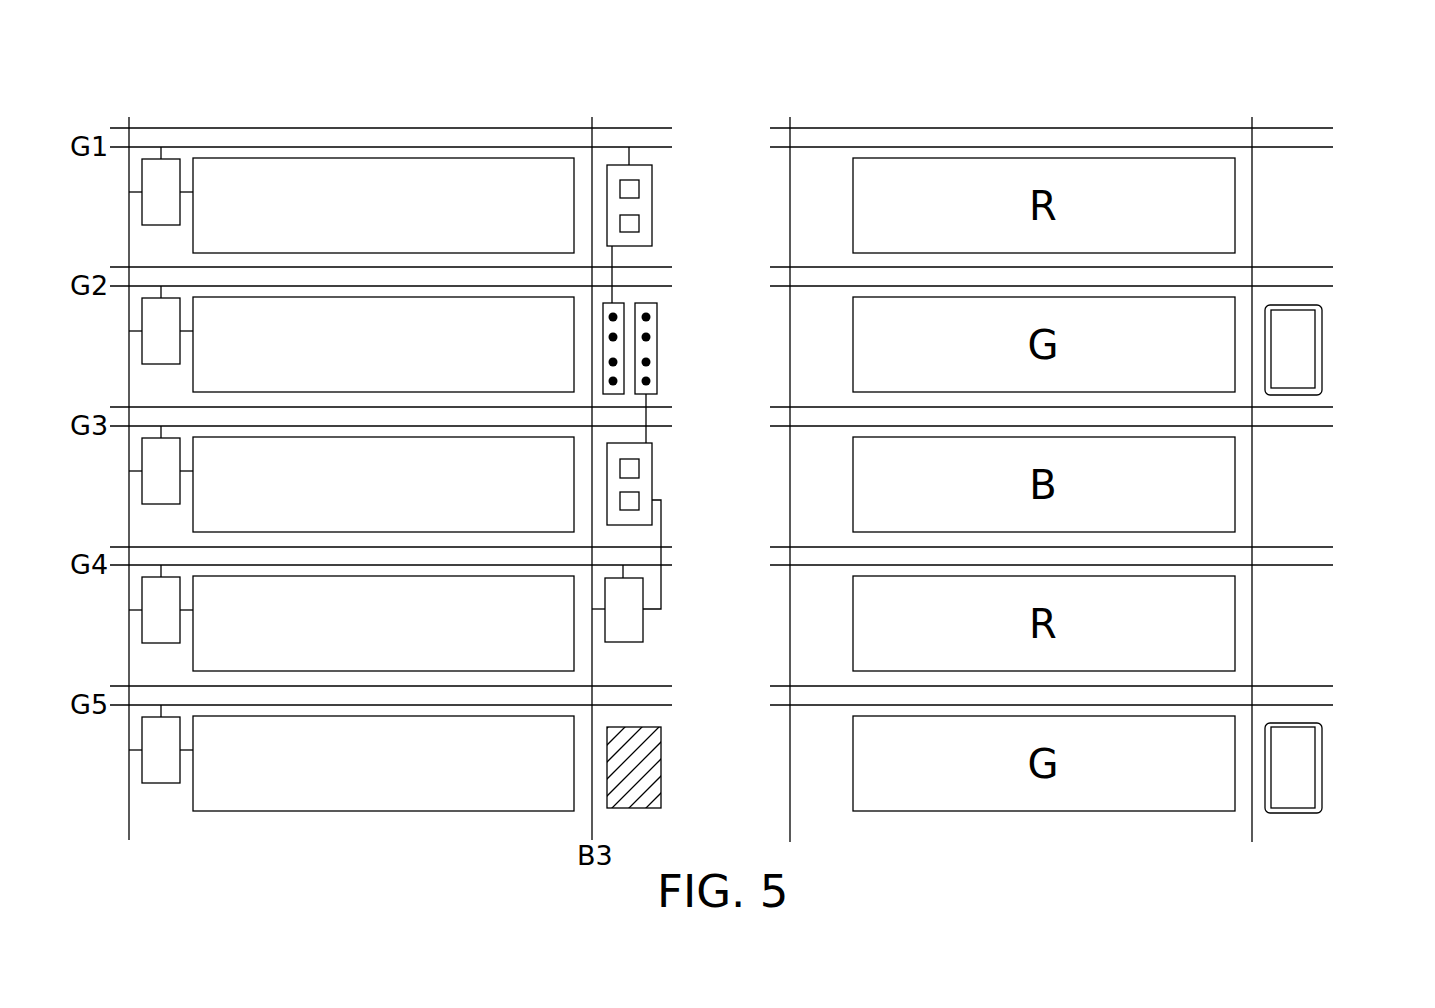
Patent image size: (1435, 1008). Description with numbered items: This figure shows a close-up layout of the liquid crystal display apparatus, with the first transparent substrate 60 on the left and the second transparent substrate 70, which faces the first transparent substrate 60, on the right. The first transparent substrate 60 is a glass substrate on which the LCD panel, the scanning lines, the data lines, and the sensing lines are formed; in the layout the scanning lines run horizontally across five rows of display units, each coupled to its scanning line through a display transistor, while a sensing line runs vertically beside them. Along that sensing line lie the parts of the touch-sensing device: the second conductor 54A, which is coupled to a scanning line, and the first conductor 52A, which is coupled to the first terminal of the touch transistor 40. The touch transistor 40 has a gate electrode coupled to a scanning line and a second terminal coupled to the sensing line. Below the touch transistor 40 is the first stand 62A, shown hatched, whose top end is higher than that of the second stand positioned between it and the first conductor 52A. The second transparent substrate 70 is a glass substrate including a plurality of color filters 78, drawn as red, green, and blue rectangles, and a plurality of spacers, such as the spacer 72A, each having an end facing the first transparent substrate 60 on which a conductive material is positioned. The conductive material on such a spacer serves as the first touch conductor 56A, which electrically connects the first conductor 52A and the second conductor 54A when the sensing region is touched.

The first transparent substrate 60 is at (176, 97).
The second transparent substrate 70 is at (1311, 99).
The color filter 78 is at (1223, 206).
The second conductor 54A is at (616, 307).
The first conductor 52A is at (652, 348).
The touch transistor 40 is at (654, 619).
The first stand 62A is at (652, 761).
The first touch conductor 56A is at (1302, 349).
The spacer 72A is at (1302, 767).